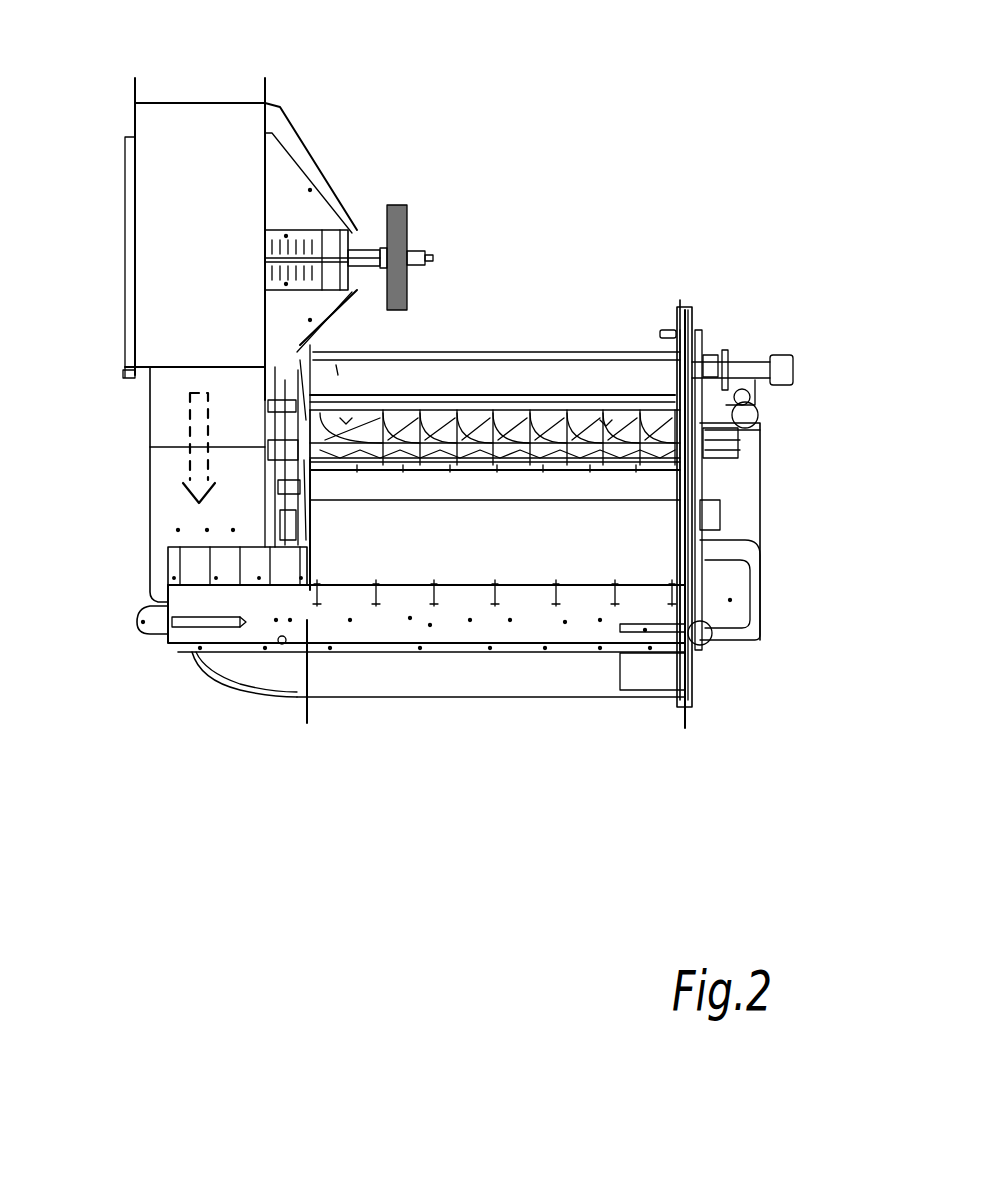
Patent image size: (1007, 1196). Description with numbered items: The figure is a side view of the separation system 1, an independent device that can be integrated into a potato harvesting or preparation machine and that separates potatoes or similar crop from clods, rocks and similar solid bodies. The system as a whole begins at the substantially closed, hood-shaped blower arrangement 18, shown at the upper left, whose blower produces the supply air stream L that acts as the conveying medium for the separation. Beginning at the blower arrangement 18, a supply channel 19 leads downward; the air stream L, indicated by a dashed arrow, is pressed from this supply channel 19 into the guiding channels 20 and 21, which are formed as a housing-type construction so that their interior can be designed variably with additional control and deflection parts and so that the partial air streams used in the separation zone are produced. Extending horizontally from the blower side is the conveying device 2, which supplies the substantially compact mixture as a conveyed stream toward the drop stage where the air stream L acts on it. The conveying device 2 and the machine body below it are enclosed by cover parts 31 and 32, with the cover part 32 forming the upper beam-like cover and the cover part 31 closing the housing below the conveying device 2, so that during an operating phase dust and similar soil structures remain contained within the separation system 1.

The separation system 1 is at (647, 100).
The conveying device 2 is at (642, 440).
The blower arrangement 18 is at (125, 258).
The supply channel 19 is at (155, 480).
The air stream L is at (190, 423).
The guiding channel 20 is at (563, 683).
The guiding channel 21 is at (387, 597).
The cover part 31 is at (575, 566).
The cover part 32 is at (542, 357).